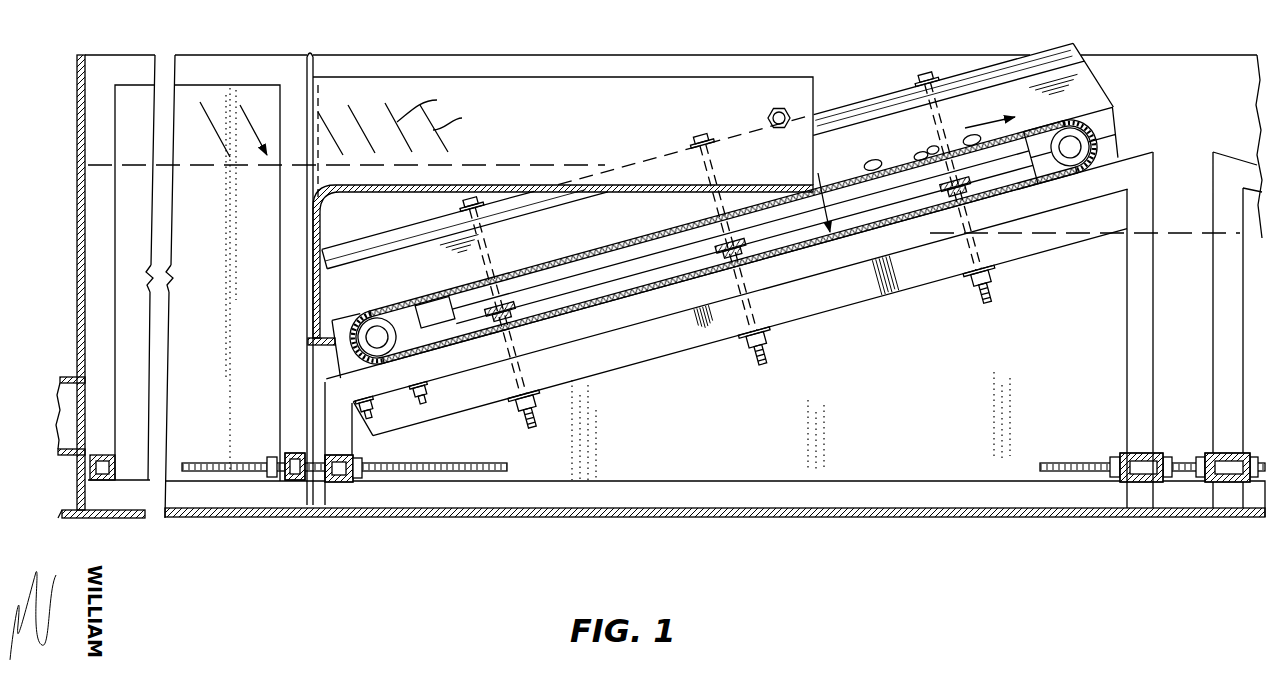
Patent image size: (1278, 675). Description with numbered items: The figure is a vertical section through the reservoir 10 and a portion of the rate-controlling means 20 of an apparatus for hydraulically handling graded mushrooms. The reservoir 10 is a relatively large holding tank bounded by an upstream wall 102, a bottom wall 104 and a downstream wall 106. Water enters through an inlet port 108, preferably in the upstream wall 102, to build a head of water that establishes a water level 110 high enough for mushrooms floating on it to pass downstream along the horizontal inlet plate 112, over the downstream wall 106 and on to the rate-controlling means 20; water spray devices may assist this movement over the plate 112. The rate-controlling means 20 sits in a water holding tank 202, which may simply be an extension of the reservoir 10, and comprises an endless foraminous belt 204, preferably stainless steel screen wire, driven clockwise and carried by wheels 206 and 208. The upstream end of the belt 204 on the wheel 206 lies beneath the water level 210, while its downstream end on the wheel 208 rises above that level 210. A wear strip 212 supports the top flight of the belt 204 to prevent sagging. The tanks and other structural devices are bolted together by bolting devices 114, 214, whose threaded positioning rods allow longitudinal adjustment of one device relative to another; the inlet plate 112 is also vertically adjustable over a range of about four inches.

The reservoir 10 is at (637, 323).
The rate-controlling means 20 is at (737, 299).
The upstream wall 102 is at (77, 258).
The bottom wall 104 is at (238, 518).
The downstream wall 106 is at (309, 380).
The inlet port 108 is at (48, 402).
The water level 110 is at (105, 164).
The horizontal inlet plate 112 is at (400, 193).
The bolting device 114 is at (294, 487).
The water holding tank 202 is at (535, 518).
The endless foraminous belt 204 is at (608, 318).
The wheel 206 is at (373, 341).
The wheel 208 is at (1070, 150).
The water level 210 is at (1175, 233).
The wear strip 212 is at (613, 246).
The bolting device 214 is at (346, 486).